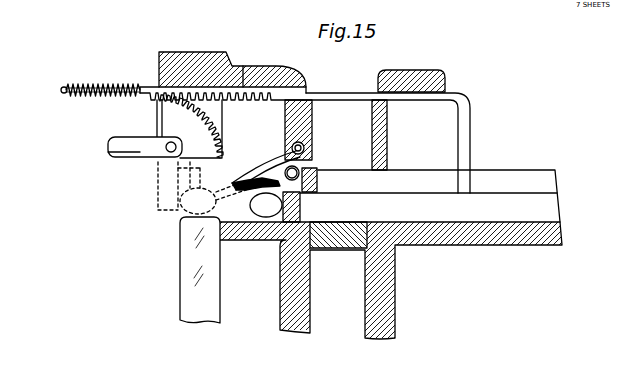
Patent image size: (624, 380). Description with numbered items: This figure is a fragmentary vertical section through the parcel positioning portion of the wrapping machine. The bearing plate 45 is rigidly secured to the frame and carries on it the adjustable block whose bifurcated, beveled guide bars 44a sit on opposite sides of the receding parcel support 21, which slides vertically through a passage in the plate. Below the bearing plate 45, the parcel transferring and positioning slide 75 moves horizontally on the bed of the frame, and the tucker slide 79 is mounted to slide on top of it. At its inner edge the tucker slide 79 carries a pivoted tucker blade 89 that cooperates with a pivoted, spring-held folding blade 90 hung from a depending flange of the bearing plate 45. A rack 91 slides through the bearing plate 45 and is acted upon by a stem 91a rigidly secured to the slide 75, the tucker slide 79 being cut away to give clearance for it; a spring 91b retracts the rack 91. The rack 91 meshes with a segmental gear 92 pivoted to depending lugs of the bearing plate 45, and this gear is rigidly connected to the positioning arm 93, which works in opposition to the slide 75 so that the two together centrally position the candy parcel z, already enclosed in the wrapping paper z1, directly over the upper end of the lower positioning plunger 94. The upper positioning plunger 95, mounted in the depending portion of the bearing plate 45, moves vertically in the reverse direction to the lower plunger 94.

The receding parcel support 21 is at (348, 229).
The beveled guide bars 44a is at (278, 66).
The bearing plate 45 is at (258, 53).
The parcel transferring and positioning slide 75 is at (236, 180).
The tucker slide 79 is at (439, 196).
The tucker blade 89 is at (306, 186).
The folding blade 90 is at (270, 172).
The rack 91 is at (146, 92).
The stem 91a is at (473, 118).
The spring 91b is at (104, 93).
The segmental gear 92 is at (154, 119).
The positioning arm 93 is at (108, 148).
The lower positioning plunger 94 is at (182, 252).
The upper positioning plunger 95 is at (158, 184).
The candy parcel z is at (258, 248).
The wrapping paper z1 is at (231, 197).